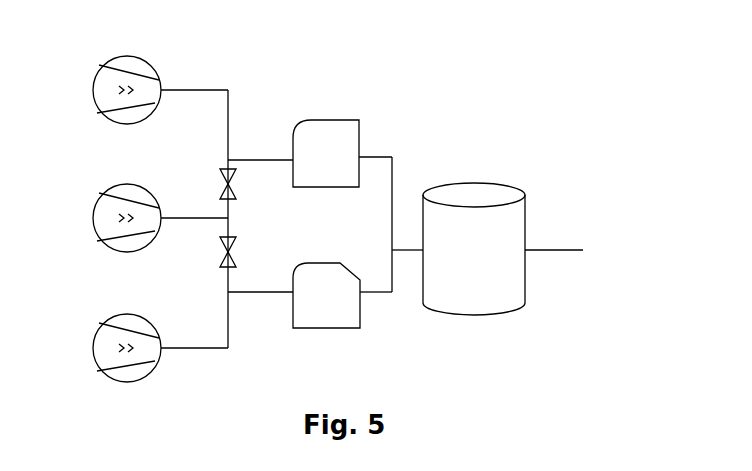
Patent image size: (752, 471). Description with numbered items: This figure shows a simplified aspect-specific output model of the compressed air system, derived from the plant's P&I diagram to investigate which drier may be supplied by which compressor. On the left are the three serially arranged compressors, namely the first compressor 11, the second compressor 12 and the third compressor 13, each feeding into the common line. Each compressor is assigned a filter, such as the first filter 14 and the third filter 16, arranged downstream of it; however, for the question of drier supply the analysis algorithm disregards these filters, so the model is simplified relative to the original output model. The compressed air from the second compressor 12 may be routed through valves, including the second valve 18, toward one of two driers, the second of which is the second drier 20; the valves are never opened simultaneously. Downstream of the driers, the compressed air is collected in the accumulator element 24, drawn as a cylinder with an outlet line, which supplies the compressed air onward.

The first compressor 11 is at (147, 62).
The second compressor 12 is at (143, 196).
The third compressor 13 is at (143, 326).
The first filter 14 is at (233, 190).
The third filter 16 is at (233, 262).
The second valve 18 is at (345, 130).
The second drier 20 is at (352, 314).
The mixer 24 is at (495, 308).